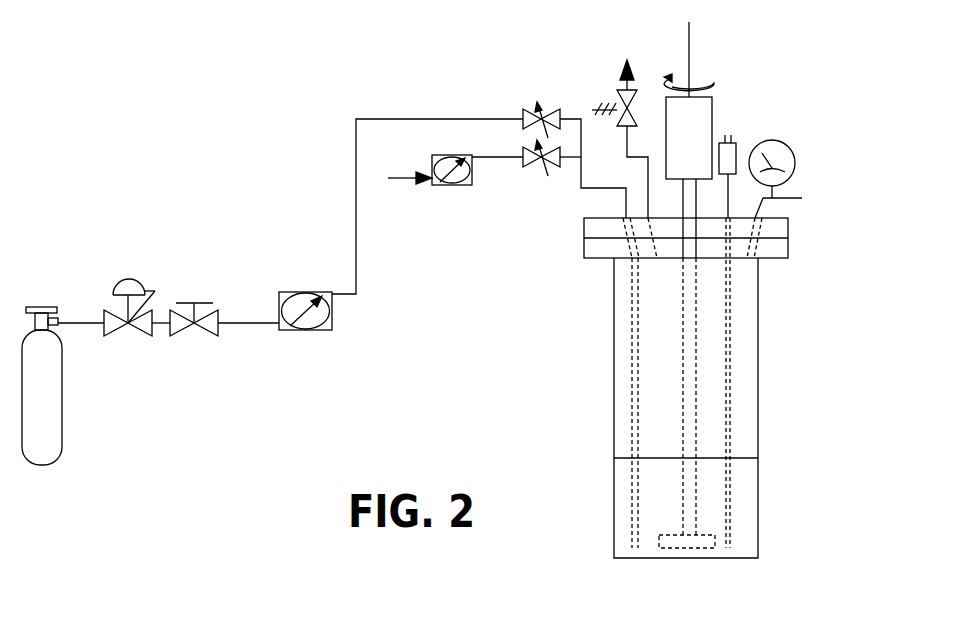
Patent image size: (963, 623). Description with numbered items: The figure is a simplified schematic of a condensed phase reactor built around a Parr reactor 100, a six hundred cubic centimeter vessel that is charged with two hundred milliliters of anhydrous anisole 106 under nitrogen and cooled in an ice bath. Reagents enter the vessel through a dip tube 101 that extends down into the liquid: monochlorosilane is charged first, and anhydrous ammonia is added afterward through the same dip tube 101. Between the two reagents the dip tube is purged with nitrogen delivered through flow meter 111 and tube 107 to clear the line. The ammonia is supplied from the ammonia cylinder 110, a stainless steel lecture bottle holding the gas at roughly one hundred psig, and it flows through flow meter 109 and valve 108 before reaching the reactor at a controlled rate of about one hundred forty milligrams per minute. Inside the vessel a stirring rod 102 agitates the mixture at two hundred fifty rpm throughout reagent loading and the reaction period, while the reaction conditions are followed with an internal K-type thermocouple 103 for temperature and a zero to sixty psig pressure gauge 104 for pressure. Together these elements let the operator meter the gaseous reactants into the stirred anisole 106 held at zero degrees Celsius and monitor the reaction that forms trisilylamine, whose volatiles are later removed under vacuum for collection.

The Parr reactor 100 is at (758, 372).
The dip tube 101 is at (632, 348).
The stirring rod 102 is at (683, 442).
The internal K-type thermocouple 103 is at (736, 142).
The pressure gauge 104 is at (790, 152).
The anhydrous anisole 106 is at (752, 498).
The tube 107 is at (516, 157).
The valve 108 is at (548, 112).
The flow meter 109 is at (298, 330).
The ammonia cylinder 110 is at (62, 420).
The flow meter 111 is at (460, 185).